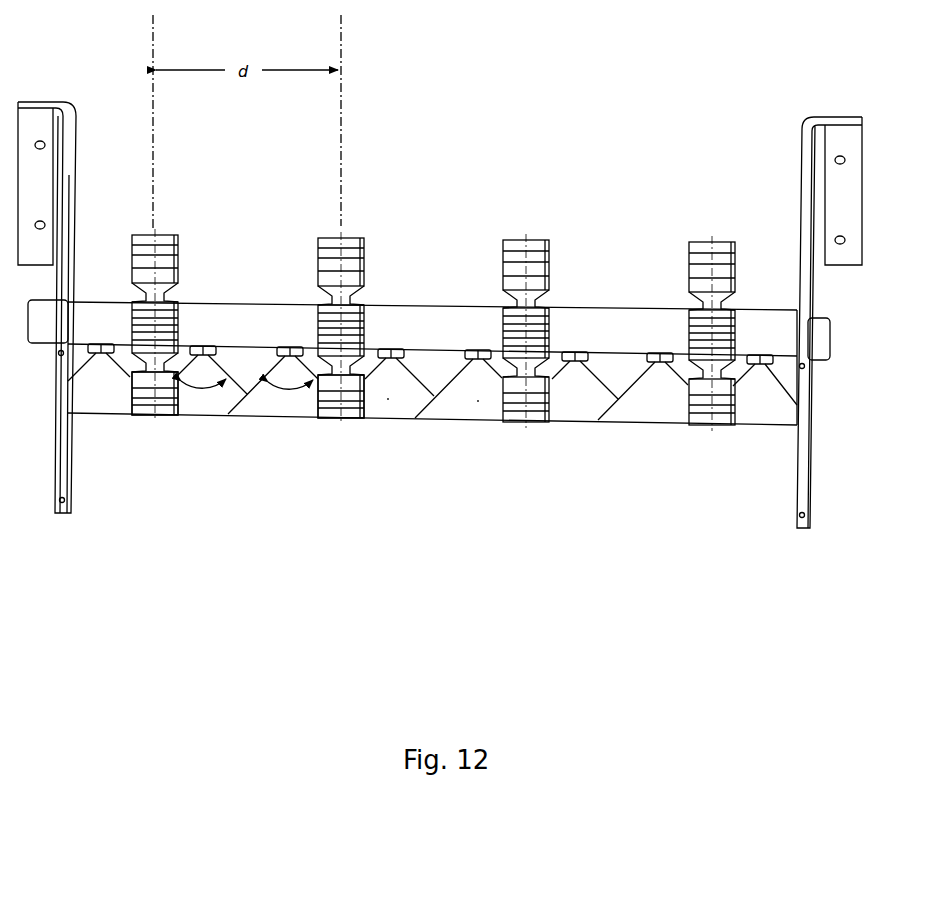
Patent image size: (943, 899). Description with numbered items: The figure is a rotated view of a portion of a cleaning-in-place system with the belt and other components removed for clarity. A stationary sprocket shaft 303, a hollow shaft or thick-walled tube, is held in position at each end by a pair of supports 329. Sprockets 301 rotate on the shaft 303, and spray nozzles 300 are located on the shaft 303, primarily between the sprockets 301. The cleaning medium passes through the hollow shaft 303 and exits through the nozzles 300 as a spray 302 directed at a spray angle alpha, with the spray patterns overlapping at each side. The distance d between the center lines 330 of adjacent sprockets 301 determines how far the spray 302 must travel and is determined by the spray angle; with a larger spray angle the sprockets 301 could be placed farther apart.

The spray nozzle 300 is at (295, 347).
The sprocket 301 is at (348, 410).
The spray 302 is at (478, 400).
The sprocket shaft 303 is at (623, 336).
The support 329 is at (72, 450).
The center line 330 is at (153, 173).